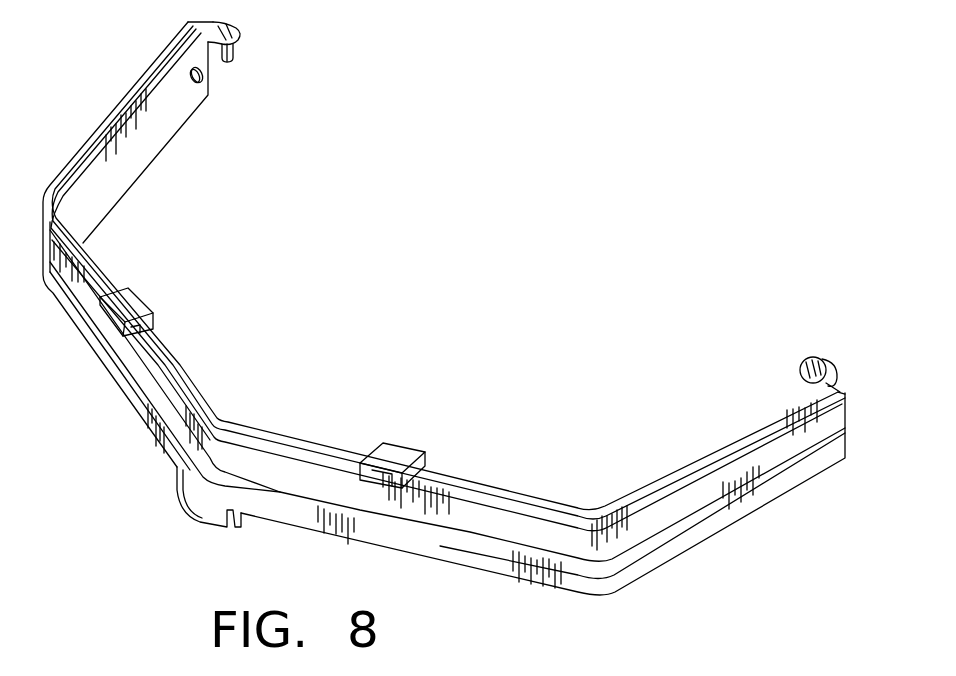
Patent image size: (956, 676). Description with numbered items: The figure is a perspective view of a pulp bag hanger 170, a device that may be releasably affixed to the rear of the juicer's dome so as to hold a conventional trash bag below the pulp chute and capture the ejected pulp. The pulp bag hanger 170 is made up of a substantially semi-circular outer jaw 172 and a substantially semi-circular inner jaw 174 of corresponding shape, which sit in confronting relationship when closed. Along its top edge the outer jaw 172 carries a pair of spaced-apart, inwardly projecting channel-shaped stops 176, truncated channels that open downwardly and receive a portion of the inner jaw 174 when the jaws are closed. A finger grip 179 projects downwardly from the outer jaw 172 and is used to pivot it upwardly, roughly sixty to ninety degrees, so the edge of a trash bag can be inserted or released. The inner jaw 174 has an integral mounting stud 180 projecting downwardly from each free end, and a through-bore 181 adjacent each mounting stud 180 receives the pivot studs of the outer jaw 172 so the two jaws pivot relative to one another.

The pulp bag hanger 170 is at (500, 247).
The outer jaw 172 is at (777, 450).
The inner jaw 174 is at (695, 463).
The channel-shaped stops 176 is at (130, 306).
The finger grip 179 is at (185, 498).
The mounting stud 180 is at (230, 58).
The through-bore 181 is at (202, 78).